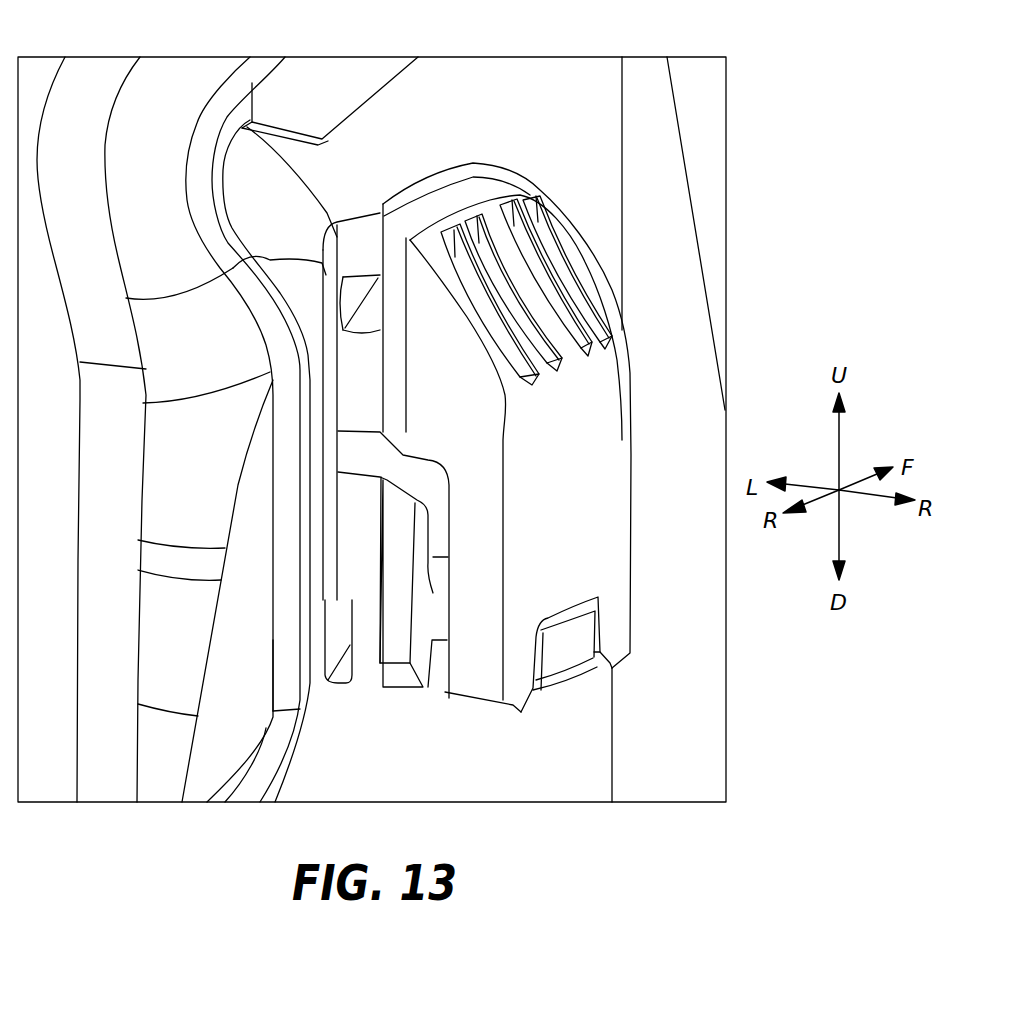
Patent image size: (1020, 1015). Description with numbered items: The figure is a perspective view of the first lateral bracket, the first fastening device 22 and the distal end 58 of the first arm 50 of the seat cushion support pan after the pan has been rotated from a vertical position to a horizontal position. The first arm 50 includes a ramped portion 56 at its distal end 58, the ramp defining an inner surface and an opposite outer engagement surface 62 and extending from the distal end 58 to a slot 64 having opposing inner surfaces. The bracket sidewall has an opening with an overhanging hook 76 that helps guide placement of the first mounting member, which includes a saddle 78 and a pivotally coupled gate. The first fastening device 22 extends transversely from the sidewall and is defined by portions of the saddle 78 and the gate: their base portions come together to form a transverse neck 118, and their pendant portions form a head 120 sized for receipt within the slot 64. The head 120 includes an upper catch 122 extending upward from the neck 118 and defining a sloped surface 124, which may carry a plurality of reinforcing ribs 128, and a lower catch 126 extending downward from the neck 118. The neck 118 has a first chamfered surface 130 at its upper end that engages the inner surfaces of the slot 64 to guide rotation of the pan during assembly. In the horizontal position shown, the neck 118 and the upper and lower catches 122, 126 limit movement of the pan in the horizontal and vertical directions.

The first fastening device 22 is at (518, 447).
The first arm 50 is at (218, 88).
The ramped portion 56 is at (268, 460).
The distal end 58 is at (200, 265).
The outer engagement surface 62 is at (270, 655).
The slot 64 is at (345, 607).
The overhanging hook 76 is at (427, 580).
The saddle 78 is at (77, 513).
The transverse neck 118 is at (360, 362).
The head 120 is at (633, 455).
The upper catch 122 is at (518, 180).
The sloped surface 124 is at (537, 263).
The lower catch 126 is at (397, 687).
The reinforcing ribs 128 is at (595, 322).
The first chamfered surface 130 is at (358, 300).